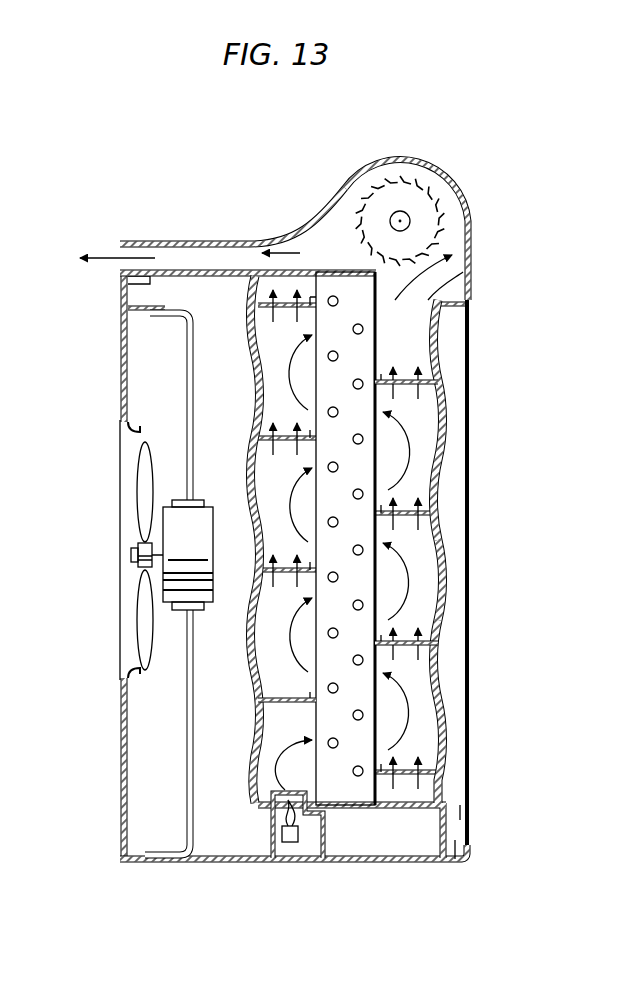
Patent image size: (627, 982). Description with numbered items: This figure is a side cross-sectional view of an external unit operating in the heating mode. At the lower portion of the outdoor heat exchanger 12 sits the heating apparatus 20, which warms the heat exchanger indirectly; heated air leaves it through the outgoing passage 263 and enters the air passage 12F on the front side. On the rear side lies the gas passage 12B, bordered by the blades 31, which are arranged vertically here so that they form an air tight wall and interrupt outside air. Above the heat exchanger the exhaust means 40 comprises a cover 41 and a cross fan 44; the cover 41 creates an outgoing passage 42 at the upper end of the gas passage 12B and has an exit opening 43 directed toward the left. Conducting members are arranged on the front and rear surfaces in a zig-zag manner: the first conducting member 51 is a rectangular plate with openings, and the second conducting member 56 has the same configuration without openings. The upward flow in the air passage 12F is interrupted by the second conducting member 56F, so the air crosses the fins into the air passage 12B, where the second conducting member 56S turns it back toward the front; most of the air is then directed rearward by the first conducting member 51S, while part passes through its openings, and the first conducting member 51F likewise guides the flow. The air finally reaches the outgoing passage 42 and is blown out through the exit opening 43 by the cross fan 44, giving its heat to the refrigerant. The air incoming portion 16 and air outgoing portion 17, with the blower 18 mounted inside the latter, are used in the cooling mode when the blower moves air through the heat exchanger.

The outdoor heat exchanger 12 is at (333, 283).
The gas passage 12B is at (432, 638).
The air passage 12F is at (268, 695).
The air incoming portion 16 is at (453, 426).
The air outgoing portion 17 is at (127, 676).
The blower 18 is at (145, 452).
The heating apparatus 20 is at (325, 836).
The blade 31 is at (446, 565).
The exhaust means 40 is at (452, 168).
The cover 41 is at (178, 243).
The outgoing passage 42 is at (400, 300).
The exit opening 43 is at (127, 254).
The cross fan 44 is at (381, 203).
The first conducting member 51 is at (443, 498).
The first conducting member 51F is at (437, 770).
The first conducting member 51S is at (250, 548).
The second conducting member 56 is at (432, 378).
The second conducting member 56F is at (257, 690).
The second conducting member 56S is at (440, 623).
The outgoing passage 263 is at (285, 808).